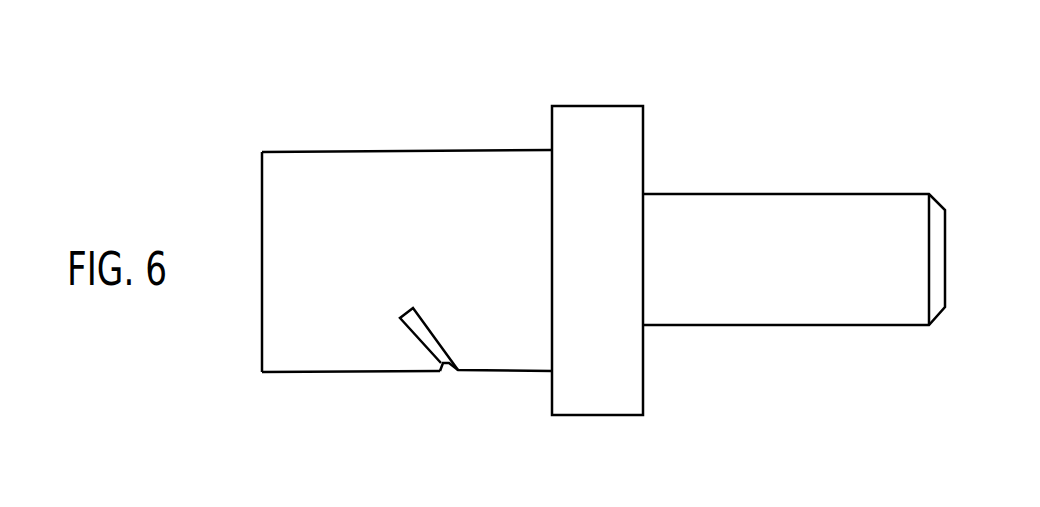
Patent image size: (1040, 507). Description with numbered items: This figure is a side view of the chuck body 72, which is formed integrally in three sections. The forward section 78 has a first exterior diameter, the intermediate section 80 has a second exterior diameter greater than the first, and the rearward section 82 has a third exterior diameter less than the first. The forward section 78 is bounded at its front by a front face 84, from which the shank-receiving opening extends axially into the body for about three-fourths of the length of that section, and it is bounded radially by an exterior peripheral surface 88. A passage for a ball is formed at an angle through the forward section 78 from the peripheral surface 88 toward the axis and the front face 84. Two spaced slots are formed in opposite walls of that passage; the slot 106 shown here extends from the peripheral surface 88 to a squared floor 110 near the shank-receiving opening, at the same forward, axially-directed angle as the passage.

The chuck body 72 is at (845, 113).
The forward section 78 is at (295, 160).
The intermediate section 80 is at (623, 122).
The rearward section 82 is at (892, 208).
The front face 84 is at (262, 190).
The exterior peripheral surface 88 is at (293, 372).
The slot 106 is at (448, 364).
The squared floor 110 is at (418, 313).